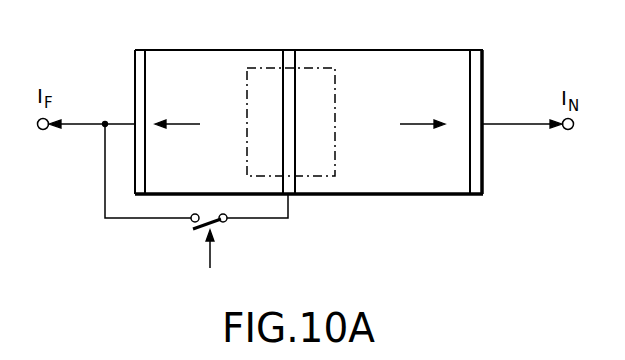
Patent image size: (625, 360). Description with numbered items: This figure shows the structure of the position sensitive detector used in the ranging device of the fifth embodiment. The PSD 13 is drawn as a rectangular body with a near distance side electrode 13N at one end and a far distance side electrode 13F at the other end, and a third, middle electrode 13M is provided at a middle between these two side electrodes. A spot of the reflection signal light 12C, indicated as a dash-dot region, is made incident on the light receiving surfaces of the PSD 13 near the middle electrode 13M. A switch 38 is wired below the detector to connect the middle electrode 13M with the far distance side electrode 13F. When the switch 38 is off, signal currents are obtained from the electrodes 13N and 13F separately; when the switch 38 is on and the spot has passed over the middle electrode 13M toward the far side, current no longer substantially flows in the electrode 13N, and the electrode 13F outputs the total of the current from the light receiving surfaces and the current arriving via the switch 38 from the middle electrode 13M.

The PSD 13 is at (437, 50).
The far distance side electrode 13F is at (135, 78).
The middle electrode 13M is at (290, 50).
The near distance side electrode 13N is at (485, 78).
The reflection signal light 12C is at (335, 60).
The switch 38 is at (226, 235).